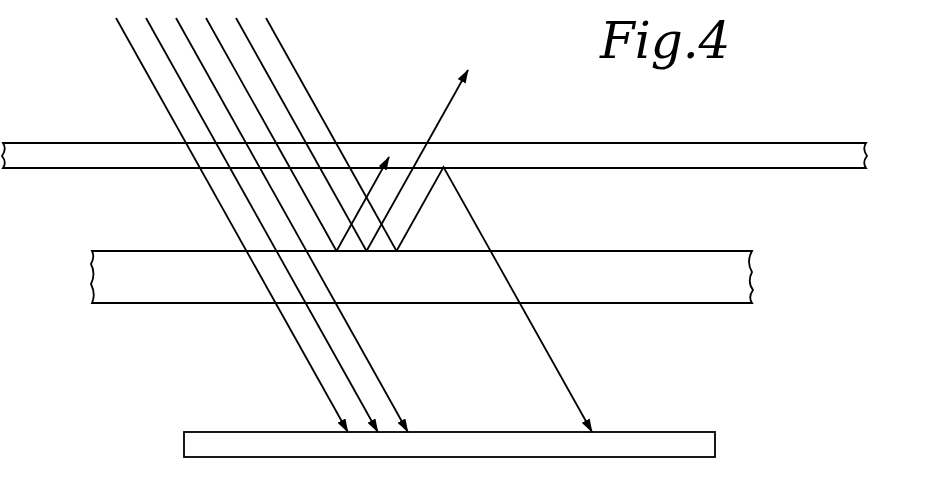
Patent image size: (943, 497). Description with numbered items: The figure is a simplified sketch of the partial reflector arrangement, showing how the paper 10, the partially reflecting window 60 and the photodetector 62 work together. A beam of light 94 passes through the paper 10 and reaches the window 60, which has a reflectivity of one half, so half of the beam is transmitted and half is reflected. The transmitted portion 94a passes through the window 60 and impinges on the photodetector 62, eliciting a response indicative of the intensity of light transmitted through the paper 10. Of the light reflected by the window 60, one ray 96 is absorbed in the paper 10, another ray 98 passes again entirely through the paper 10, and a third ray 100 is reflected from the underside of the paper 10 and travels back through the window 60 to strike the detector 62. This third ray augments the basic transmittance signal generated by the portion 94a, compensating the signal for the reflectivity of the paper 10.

The paper 10 is at (618, 143).
The partially reflecting window 60 is at (665, 251).
The photodetector 62 is at (647, 432).
The beam of light 94 is at (140, 90).
The portion of the beam 94a is at (373, 347).
The ray 96 is at (374, 182).
The ray 98 is at (440, 120).
The ray 100 is at (411, 223).